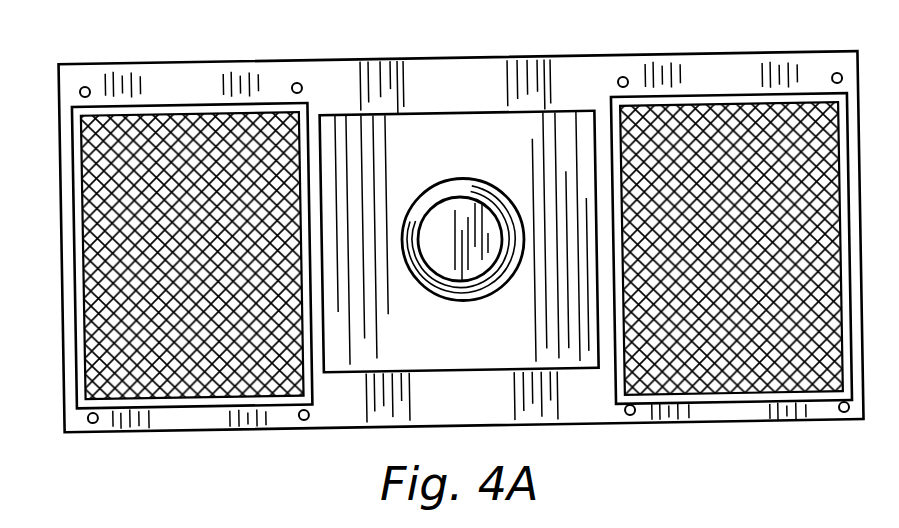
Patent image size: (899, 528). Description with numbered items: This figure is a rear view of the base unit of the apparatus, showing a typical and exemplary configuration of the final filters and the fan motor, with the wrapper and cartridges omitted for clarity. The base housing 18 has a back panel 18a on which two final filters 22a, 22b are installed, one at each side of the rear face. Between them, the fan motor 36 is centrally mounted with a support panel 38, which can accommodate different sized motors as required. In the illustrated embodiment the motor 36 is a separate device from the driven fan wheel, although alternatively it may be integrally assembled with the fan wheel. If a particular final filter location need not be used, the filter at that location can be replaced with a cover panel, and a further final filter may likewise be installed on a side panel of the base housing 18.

The base housing 18 is at (62, 248).
The back panel 18a is at (327, 88).
The final filter 22a is at (188, 143).
The final filter 22b is at (732, 160).
The fan motor 36 is at (448, 233).
The support panel 38 is at (543, 157).